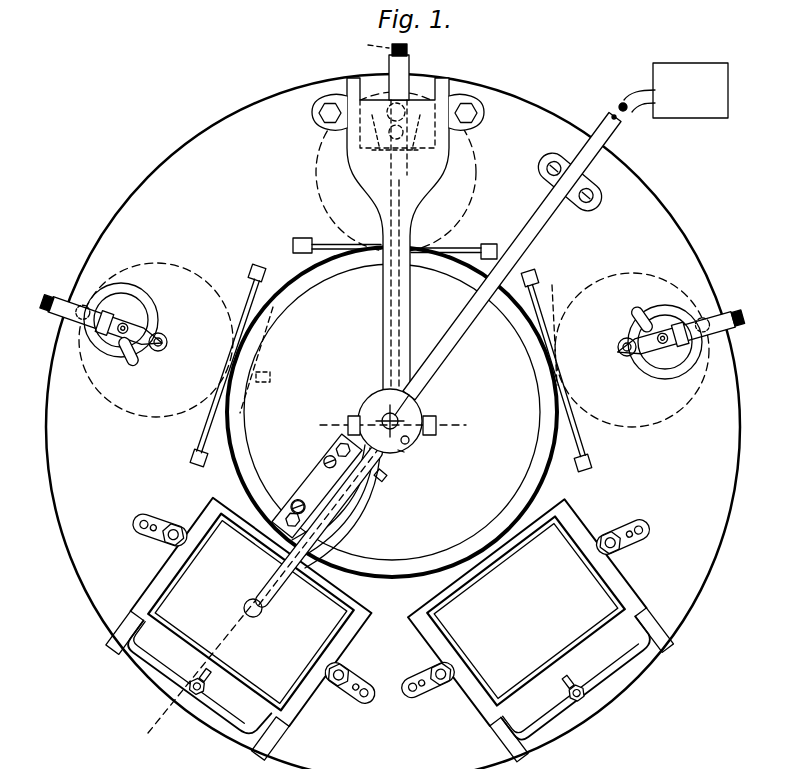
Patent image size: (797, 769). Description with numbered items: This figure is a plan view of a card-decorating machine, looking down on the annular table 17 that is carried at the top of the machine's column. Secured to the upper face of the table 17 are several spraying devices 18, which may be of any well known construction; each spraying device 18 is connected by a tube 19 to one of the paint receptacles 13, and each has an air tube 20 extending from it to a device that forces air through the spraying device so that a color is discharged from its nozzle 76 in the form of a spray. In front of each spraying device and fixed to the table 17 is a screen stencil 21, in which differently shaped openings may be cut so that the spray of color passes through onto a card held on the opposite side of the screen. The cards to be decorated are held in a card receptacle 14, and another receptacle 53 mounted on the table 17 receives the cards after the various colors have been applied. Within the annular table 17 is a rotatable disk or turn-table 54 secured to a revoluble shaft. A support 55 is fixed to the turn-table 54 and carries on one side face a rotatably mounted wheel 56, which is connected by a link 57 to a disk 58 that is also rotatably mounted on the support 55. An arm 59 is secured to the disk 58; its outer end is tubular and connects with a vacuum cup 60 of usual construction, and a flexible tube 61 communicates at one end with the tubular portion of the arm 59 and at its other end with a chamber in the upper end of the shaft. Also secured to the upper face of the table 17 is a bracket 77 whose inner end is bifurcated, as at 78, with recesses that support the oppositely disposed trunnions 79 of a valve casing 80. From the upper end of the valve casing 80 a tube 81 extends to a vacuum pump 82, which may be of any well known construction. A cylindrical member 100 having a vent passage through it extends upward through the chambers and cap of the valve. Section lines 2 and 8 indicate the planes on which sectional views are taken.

The section line 2 is at (268, 395).
The section line 8 is at (392, 426).
The paint receptacles 13 is at (470, 196).
The card receptacle 14 is at (160, 592).
The annular table 17 is at (197, 148).
The spraying devices 18 is at (409, 62).
The tube 19 is at (124, 362).
The air tube 20 is at (102, 296).
The screen stencil 21 is at (318, 242).
The receptacle 53 is at (565, 535).
The rotatable disk or turn-table 54 is at (548, 480).
The support 55 is at (325, 470).
The wheel 56 is at (365, 493).
The link 57 is at (350, 516).
The disk 58 is at (305, 503).
The arm 59 is at (270, 585).
The vacuum cup 60 is at (260, 615).
The flexible tube 61 is at (384, 476).
The nozzle 76 is at (158, 333).
The bracket 77 is at (415, 196).
The bifurcated end 78 is at (368, 394).
The trunnions 79 is at (348, 414).
The valve casing 80 is at (410, 442).
The tube 81 is at (468, 330).
The vacuum pump 82 is at (676, 118).
The cylindrical member 100 is at (405, 452).